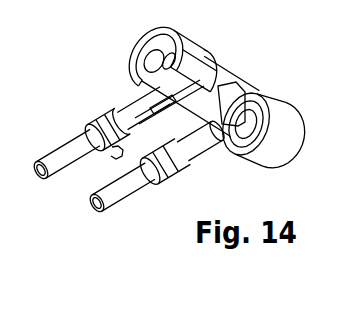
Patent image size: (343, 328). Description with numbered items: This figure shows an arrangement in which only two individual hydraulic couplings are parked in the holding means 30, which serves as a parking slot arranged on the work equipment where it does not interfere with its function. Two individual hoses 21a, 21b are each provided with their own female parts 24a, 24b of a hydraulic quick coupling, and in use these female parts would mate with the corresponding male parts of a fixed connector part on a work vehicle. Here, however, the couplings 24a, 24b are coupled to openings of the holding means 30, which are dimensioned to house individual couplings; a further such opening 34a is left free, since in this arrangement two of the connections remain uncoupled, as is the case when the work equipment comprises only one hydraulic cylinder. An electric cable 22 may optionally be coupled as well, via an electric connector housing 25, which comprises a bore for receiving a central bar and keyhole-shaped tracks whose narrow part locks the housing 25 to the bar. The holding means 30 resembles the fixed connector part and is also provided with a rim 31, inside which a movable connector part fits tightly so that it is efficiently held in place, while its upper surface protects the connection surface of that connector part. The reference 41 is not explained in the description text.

The hose 21a is at (62, 155).
The hose 21b is at (127, 192).
The electric cable 22 is at (118, 154).
The female part of hydraulic quick coupling 24a is at (144, 115).
The female part of hydraulic quick coupling 24b is at (204, 143).
The electric connector housing 25 is at (160, 128).
The holding means 30 is at (222, 70).
The rim 31 is at (258, 122).
The opening 34a is at (145, 72).
The component 41 is at (333, 189).